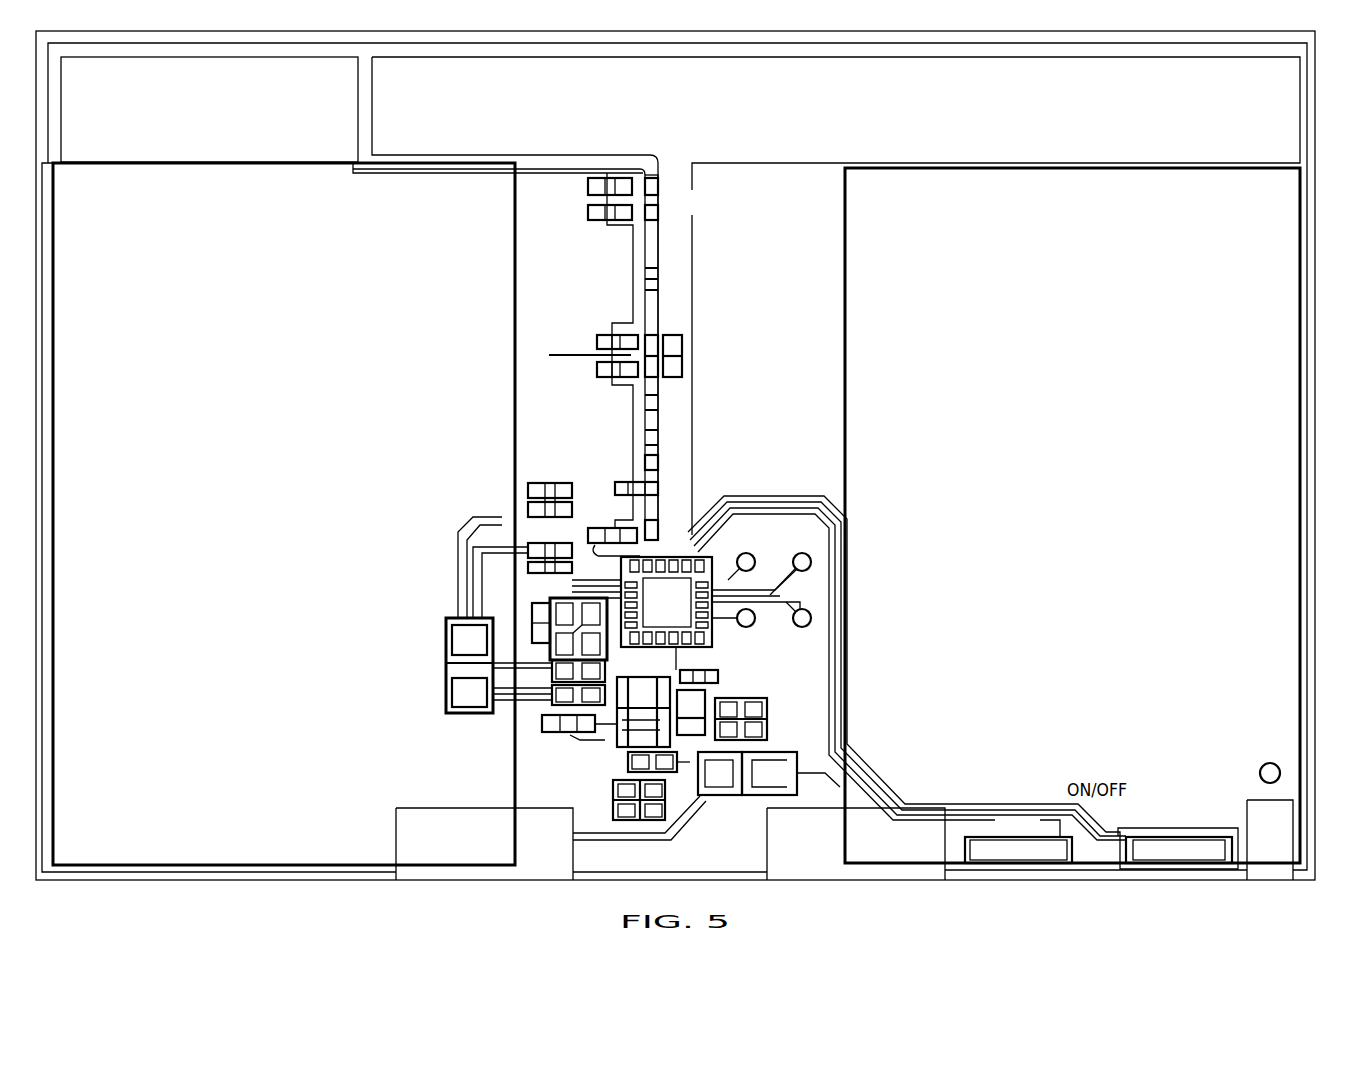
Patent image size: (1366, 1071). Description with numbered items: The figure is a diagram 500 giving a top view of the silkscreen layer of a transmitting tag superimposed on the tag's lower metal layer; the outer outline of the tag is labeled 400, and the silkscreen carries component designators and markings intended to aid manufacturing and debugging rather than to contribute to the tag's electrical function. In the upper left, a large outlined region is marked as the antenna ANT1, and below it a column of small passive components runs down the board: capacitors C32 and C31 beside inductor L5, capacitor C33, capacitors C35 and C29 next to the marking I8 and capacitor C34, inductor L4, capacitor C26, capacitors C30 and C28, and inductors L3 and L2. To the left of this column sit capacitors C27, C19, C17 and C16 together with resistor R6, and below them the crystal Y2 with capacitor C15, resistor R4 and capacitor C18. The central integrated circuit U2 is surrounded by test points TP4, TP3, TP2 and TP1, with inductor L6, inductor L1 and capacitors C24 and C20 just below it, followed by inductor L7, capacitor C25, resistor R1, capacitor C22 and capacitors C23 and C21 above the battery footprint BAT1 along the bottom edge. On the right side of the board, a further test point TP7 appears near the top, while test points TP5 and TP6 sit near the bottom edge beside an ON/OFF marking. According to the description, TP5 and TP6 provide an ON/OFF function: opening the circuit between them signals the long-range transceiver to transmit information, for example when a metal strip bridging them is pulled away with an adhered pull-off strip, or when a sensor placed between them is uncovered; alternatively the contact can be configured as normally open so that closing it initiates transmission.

The transmitter housing outline 400 is at (1115, 886).
The diagram 500 is at (1276, 597).
The antenna ANT1 is at (209, 109).
The capacitor C32 is at (606, 186).
The capacitor C31 is at (606, 212).
The inductor L5 is at (690, 202).
The capacitor C33 is at (627, 357).
The capacitor C35 is at (600, 343).
The component I8 is at (577, 357).
The capacitor C29 is at (600, 371).
The capacitor C34 is at (680, 356).
The inductor L4 is at (619, 400).
The capacitor C26 is at (550, 481).
The capacitor C30 is at (649, 467).
The capacitor C28 is at (664, 479).
The inductor L3 is at (663, 526).
The inductor L2 is at (626, 542).
The capacitor C27 is at (493, 559).
The capacitor C19 is at (528, 530).
The capacitor C17 is at (562, 587).
The capacitor C16 is at (484, 625).
The resistor R6 is at (480, 665).
The crystal Y2 is at (614, 648).
The capacitor C15 is at (563, 671).
The resistor R4 is at (567, 695).
The capacitor C18 is at (563, 738).
The integrated circuit U2 is at (710, 613).
The test point TP4 is at (782, 537).
The test point TP3 is at (792, 559).
The test point TP2 is at (800, 605).
The test point TP1 is at (747, 636).
The test point TP6 is at (963, 682).
The test point TP5 is at (1018, 838).
The test point TP7 is at (1270, 760).
The inductor L6 is at (643, 698).
The inductor L1 is at (691, 724).
The capacitor C24 is at (676, 660).
The capacitor C20 is at (718, 685).
The inductor L7 is at (593, 738).
The capacitor C25 is at (642, 762).
The resistor R1 is at (720, 773).
The capacitor C22 is at (791, 773).
The capacitor C23 is at (621, 800).
The capacitor C21 is at (609, 813).
The battery BAT1 is at (639, 829).